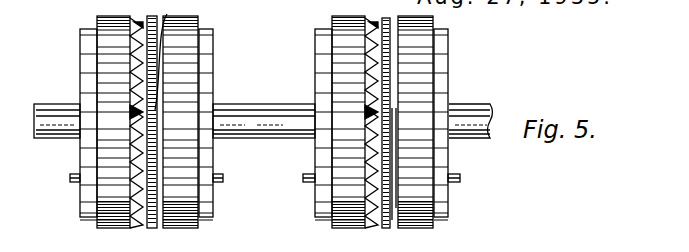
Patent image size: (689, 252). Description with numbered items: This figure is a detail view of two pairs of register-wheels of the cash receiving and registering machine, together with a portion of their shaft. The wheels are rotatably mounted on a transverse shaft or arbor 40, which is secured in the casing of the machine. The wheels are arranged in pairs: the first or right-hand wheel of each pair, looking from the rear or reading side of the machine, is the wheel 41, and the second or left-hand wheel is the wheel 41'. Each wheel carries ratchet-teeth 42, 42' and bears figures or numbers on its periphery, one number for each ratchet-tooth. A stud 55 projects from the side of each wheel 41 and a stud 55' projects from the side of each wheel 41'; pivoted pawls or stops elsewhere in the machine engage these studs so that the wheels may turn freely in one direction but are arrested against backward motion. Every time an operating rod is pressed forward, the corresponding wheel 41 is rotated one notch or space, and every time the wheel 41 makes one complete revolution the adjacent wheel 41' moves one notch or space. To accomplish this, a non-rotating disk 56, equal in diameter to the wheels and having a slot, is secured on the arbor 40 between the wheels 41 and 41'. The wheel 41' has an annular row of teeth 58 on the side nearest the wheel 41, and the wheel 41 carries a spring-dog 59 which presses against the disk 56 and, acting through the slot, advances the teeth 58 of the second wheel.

The transverse shaft or arbor 40 is at (263, 117).
The register-wheel 41 is at (308, 133).
The register-wheel 41' is at (222, 133).
The ratchet-teeth 42 is at (338, 123).
The ratchet-teeth 42' is at (191, 123).
The stud 55 is at (348, 178).
The stud 55' is at (177, 177).
The non-rotating disk 56 is at (153, 229).
The annular row of teeth 58 is at (135, 29).
The spring-dog 59 is at (394, 239).